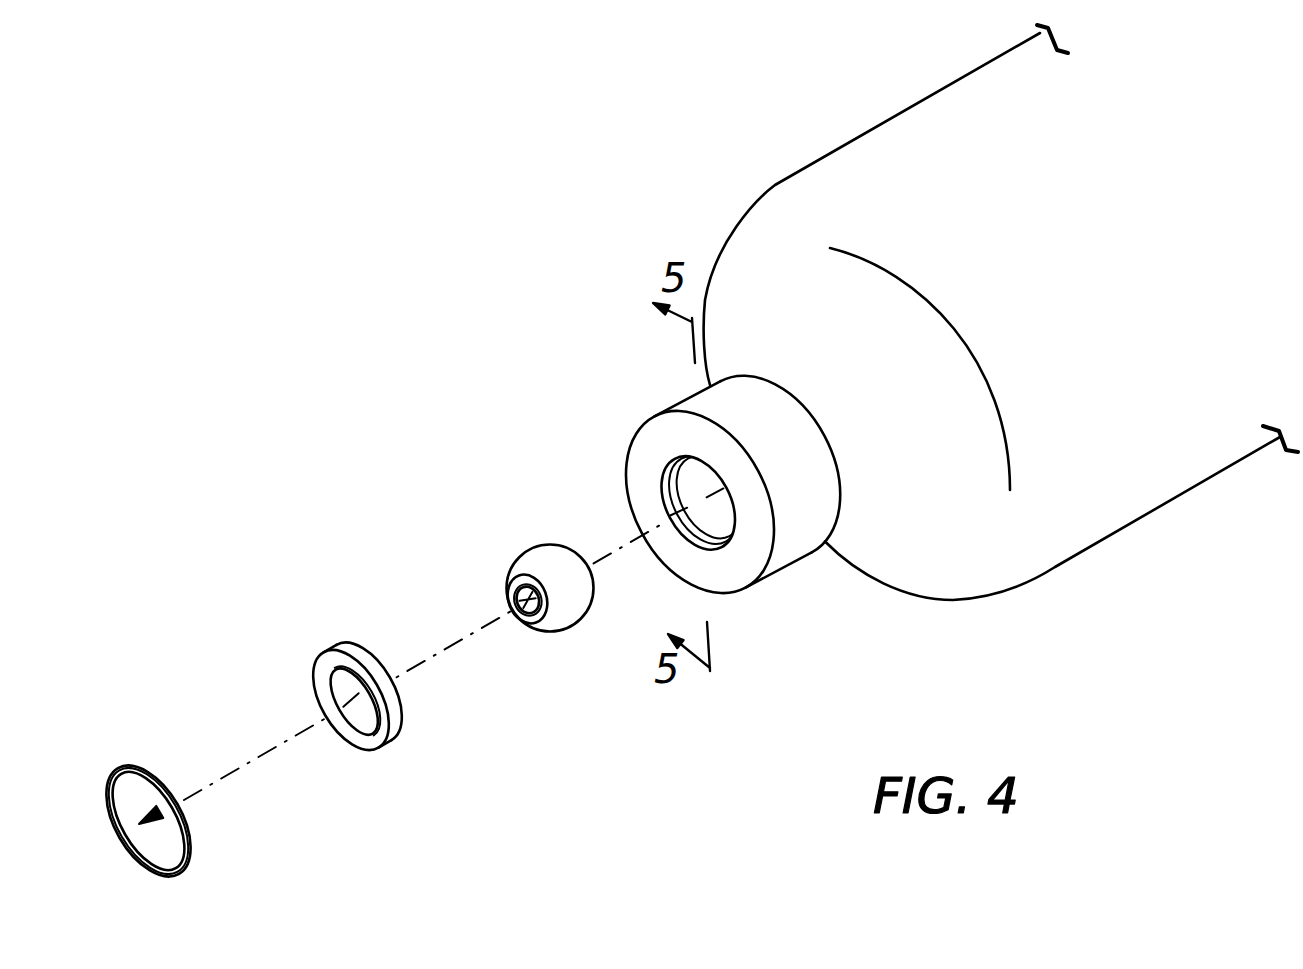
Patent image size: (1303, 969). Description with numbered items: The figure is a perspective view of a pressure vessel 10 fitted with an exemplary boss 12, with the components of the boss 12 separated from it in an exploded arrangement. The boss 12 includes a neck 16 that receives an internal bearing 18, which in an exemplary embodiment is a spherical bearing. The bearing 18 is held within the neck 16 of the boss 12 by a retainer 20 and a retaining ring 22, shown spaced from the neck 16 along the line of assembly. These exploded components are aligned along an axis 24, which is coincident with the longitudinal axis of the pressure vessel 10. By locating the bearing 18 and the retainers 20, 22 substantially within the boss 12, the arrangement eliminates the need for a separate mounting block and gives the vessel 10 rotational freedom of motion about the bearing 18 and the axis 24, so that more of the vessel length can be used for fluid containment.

The pressure vessel 10 is at (918, 127).
The boss 12 is at (640, 497).
The neck 16 is at (812, 489).
The bearing 18 is at (562, 592).
The retainer 20 is at (367, 747).
The retaining ring 22 is at (178, 867).
The axis 24 is at (415, 667).